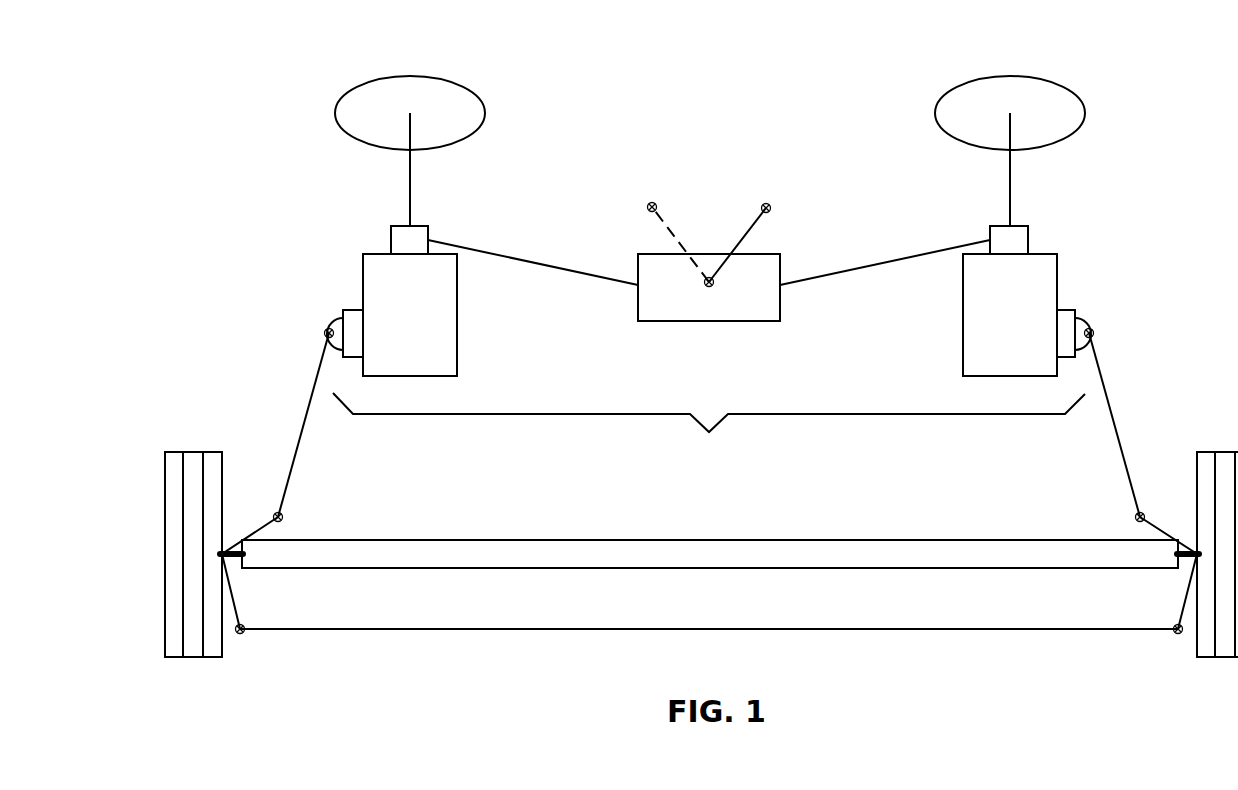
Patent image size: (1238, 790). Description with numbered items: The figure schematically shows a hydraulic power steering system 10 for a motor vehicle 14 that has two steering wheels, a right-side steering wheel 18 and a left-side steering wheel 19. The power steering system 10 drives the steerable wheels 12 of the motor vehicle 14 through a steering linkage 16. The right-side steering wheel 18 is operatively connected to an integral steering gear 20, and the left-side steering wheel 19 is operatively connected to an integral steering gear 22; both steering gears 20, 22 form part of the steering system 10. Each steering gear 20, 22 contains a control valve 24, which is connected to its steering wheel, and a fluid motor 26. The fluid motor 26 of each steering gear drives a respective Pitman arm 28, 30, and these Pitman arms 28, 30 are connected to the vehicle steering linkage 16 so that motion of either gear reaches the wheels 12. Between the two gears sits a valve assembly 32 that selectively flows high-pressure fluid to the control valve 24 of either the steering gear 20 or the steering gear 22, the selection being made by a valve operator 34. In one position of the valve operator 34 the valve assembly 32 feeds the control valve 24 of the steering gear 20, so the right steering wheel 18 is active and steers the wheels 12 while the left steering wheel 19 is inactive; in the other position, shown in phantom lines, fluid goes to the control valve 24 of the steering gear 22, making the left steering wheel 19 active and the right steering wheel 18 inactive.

The hydraulic power steering system 10 is at (709, 429).
The steerable wheels 12 is at (191, 451).
The motor vehicle 14 is at (836, 540).
The steering linkage 16 is at (812, 629).
The right-side steering wheel 18 is at (1066, 88).
The left-side steering wheel 19 is at (457, 87).
The integral steering gear 20 is at (1058, 268).
The integral steering gear 22 is at (362, 273).
The control valve 24 is at (390, 238).
The fluid motor 26 is at (458, 328).
The Pitman arm 28 is at (1087, 324).
The Pitman arm 30 is at (329, 326).
The valve assembly 32 is at (693, 321).
The valve operator 34 is at (752, 222).